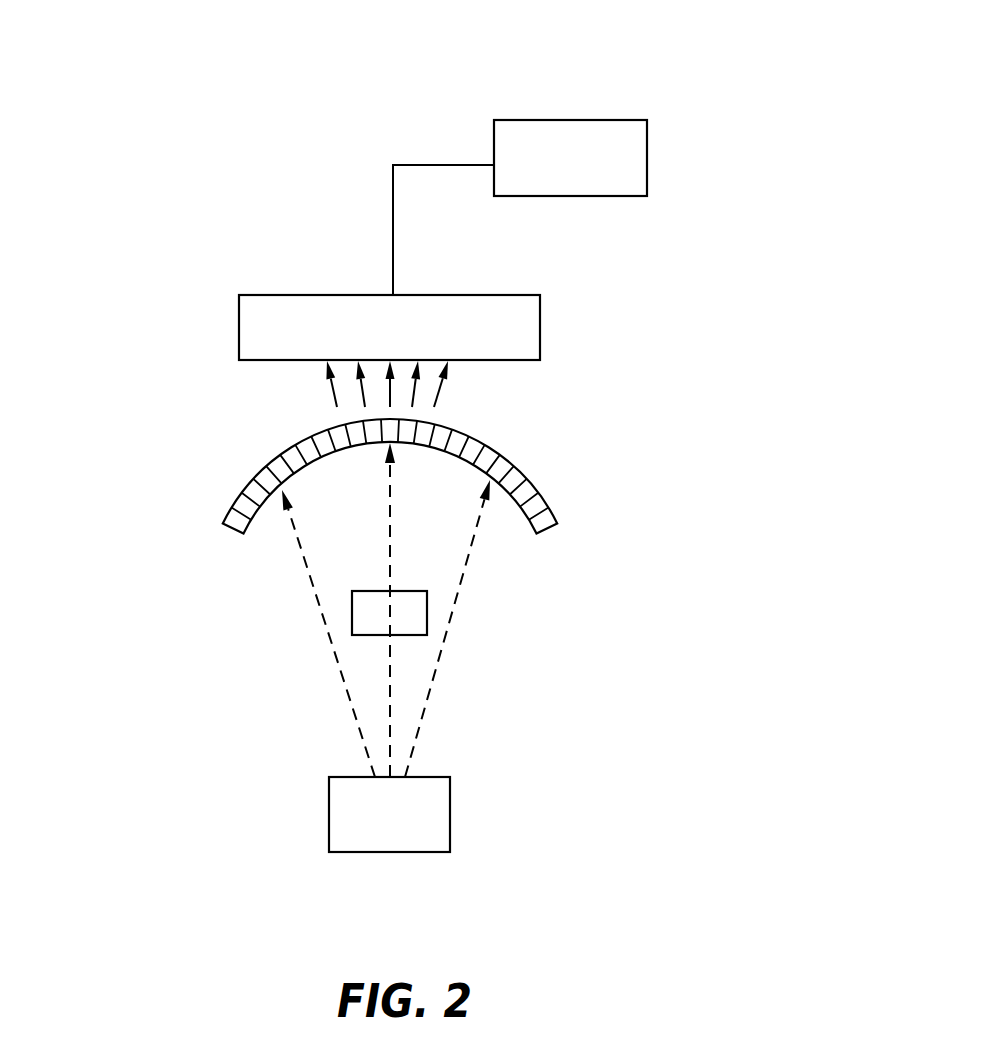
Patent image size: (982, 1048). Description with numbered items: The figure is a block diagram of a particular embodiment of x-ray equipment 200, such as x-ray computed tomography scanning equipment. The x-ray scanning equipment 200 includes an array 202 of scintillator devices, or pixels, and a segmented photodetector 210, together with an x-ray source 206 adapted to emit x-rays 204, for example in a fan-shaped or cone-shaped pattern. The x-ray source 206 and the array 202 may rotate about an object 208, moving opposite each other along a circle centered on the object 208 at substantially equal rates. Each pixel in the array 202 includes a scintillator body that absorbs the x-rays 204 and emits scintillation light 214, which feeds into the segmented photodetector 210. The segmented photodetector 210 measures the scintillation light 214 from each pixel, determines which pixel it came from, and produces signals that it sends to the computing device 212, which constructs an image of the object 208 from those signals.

The x-ray equipment 200 is at (102, 88).
The array of scintillator devices 202 is at (264, 442).
The x-rays 204 is at (310, 587).
The x-ray source 206 is at (328, 806).
The object 208 is at (375, 592).
The segmented photodetector 210 is at (298, 295).
The computing device 212 is at (539, 119).
The scintillation light 214 is at (440, 390).